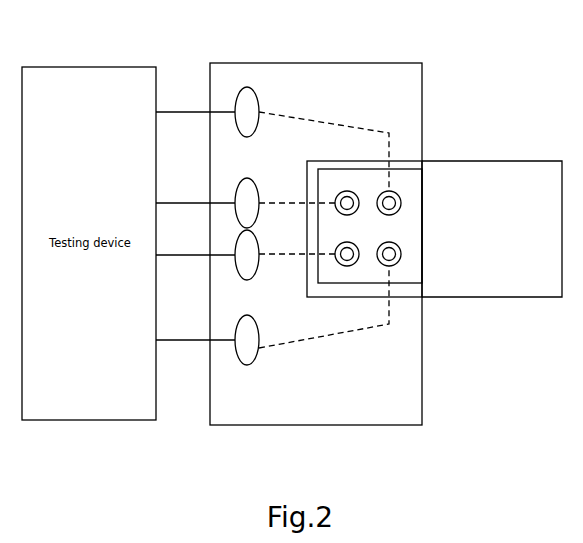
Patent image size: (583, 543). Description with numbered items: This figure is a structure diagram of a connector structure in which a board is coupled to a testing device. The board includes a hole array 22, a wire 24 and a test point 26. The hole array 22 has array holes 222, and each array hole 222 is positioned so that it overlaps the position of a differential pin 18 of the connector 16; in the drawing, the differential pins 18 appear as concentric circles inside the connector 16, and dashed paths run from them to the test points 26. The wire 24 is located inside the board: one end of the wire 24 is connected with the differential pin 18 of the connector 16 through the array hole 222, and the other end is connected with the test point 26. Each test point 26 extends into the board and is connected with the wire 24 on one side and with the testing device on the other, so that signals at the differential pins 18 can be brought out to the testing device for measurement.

The connector 16 is at (500, 161).
The differential pin 18 is at (398, 214).
The hole array 22 is at (400, 161).
The wire 24 is at (316, 219).
The test point 26 is at (277, 387).
The array hole 222 is at (401, 206).